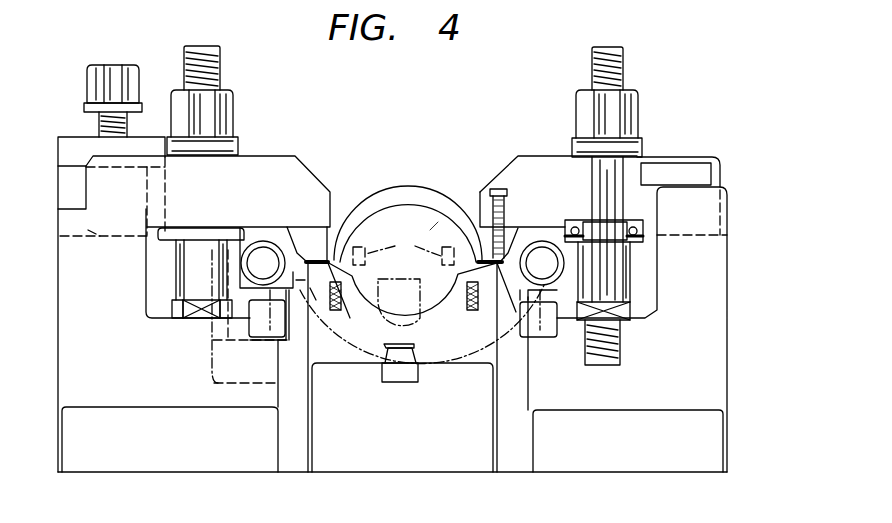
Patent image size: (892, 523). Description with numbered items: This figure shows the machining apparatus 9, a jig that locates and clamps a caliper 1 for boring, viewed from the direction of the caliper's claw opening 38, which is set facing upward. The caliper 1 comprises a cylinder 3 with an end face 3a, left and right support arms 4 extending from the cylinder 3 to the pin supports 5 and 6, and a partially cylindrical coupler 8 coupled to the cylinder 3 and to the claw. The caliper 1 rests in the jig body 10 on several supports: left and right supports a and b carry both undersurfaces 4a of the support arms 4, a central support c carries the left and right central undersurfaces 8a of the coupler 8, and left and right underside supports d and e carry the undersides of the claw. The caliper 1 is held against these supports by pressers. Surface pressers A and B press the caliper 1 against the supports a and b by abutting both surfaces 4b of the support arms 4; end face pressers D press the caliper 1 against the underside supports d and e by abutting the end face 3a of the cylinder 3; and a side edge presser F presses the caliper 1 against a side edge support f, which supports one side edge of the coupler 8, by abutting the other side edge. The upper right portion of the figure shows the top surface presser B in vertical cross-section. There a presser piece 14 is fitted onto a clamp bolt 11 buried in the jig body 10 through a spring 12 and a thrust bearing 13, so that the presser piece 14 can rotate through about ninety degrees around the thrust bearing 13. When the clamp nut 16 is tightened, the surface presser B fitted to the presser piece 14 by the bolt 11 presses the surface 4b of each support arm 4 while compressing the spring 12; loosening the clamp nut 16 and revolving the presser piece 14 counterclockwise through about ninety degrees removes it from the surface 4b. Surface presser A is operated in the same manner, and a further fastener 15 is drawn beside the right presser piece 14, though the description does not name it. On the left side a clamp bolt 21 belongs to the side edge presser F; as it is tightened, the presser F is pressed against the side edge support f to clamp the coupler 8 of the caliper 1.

The caliper 1 is at (432, 205).
The cylinder 3 is at (392, 204).
The end face of the cylinder 3a is at (435, 220).
The support arm 4 is at (300, 286).
The undersurface of the support arm 4a is at (256, 338).
The surface of the support arm 4b is at (293, 240).
The pin support 5 is at (545, 240).
The pin support 6 is at (264, 232).
The coupler 8 is at (448, 346).
The central undersurface of the coupler 8a is at (382, 374).
The machining apparatus 9 is at (512, 134).
The jig body 10 is at (727, 290).
The clamp bolt 11 is at (220, 76).
The spring 12 is at (636, 290).
The thrust bearing 13 is at (648, 226).
The presser piece 14 is at (288, 158).
The bolt 15 is at (490, 188).
The clamp nut 16 is at (234, 121).
The clamp bolt 21 is at (87, 84).
The claw opening 38 is at (356, 334).
The surface presser A is at (328, 256).
The surface presser B is at (480, 254).
The end face presser D is at (413, 270).
The side edge presser F is at (306, 318).
The support a is at (316, 294).
The support b is at (546, 287).
The central support c is at (404, 340).
The underside support d is at (341, 296).
The underside support e is at (467, 294).
The side edge support f is at (514, 330).